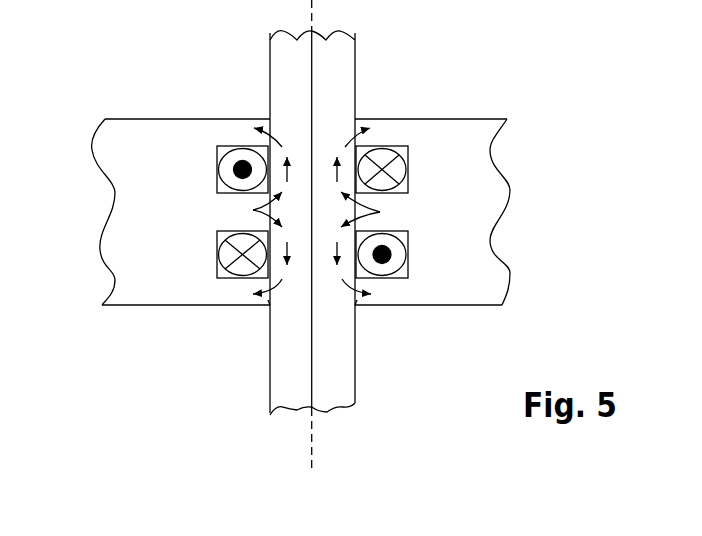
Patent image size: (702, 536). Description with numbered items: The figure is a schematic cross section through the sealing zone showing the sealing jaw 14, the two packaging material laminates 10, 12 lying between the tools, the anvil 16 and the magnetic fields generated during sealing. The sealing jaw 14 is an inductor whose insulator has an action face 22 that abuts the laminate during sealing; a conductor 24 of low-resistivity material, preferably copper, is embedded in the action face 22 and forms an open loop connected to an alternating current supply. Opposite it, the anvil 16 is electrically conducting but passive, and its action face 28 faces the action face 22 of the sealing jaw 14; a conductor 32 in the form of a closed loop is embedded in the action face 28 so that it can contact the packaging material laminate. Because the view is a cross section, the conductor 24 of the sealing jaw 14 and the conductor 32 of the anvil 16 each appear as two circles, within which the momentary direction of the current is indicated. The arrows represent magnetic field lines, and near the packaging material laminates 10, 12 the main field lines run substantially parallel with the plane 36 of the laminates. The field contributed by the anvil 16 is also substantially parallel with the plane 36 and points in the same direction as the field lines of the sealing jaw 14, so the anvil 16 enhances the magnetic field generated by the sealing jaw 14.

The packaging material laminate 10 is at (283, 387).
The packaging material laminate 12 is at (338, 383).
The sealing jaw 14 is at (128, 202).
The anvil 16 is at (483, 187).
The action face 22 is at (269, 310).
The conductor 24 is at (239, 139).
The action face 28 is at (356, 313).
The conductor 32 is at (395, 139).
The plane of the packaging material laminates 36 is at (313, 447).